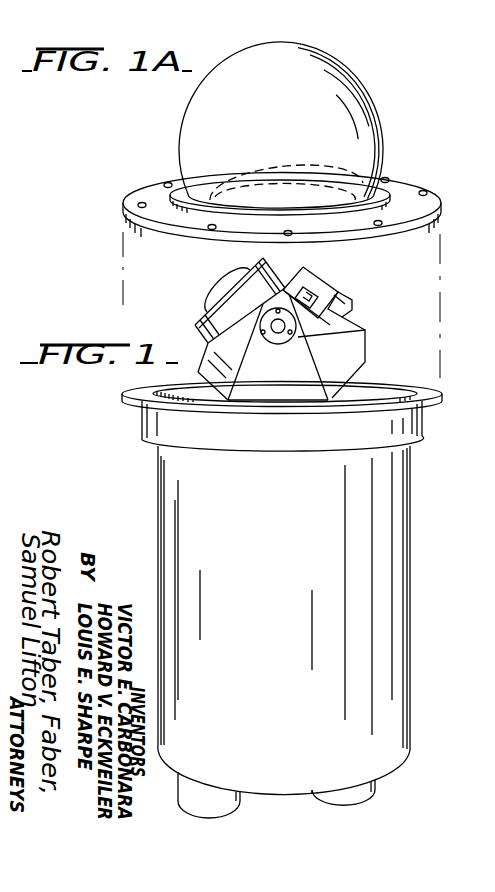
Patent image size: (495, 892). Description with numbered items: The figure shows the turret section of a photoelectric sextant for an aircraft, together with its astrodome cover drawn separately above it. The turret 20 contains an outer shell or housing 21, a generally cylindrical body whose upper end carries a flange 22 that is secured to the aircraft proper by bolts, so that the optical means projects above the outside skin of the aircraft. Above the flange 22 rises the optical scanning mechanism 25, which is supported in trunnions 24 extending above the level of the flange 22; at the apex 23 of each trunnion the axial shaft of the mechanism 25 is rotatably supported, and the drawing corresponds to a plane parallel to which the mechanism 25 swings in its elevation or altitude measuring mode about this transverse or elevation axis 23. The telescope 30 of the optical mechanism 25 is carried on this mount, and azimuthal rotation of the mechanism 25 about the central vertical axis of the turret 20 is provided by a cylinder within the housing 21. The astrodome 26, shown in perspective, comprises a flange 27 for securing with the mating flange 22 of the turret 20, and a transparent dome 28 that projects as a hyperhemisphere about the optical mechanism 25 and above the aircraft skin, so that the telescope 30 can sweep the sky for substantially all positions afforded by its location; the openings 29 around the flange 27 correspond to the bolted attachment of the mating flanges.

In FIG. 1, the turret 20 is at (270, 600).
In FIG. 1, the outer shell or housing 21 is at (158, 466).
In FIG. 1, the flange 22 is at (133, 407).
In FIG. 1, the apex (transverse or elevation axis) 23 is at (277, 340).
In FIG. 1, the trunnions 24 is at (262, 329).
In FIG. 1, the optical scanning mechanism 25 is at (222, 307).
In FIG. 1A, the astrodome 26 is at (282, 149).
In FIG. 1A, the flange 27 is at (171, 221).
In FIG. 1A, the transparent dome 28 is at (367, 84).
In FIG. 1A, the bolt holes 29 is at (424, 188).
In FIG. 1, the telescope 30 is at (207, 288).